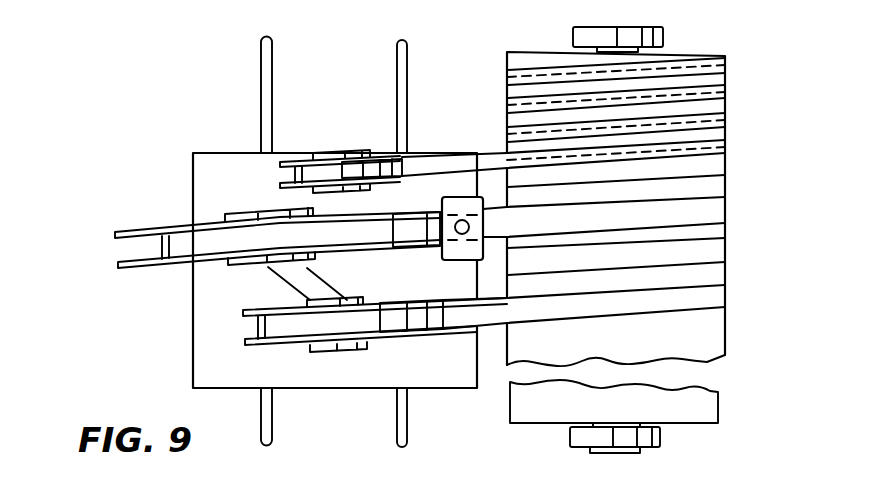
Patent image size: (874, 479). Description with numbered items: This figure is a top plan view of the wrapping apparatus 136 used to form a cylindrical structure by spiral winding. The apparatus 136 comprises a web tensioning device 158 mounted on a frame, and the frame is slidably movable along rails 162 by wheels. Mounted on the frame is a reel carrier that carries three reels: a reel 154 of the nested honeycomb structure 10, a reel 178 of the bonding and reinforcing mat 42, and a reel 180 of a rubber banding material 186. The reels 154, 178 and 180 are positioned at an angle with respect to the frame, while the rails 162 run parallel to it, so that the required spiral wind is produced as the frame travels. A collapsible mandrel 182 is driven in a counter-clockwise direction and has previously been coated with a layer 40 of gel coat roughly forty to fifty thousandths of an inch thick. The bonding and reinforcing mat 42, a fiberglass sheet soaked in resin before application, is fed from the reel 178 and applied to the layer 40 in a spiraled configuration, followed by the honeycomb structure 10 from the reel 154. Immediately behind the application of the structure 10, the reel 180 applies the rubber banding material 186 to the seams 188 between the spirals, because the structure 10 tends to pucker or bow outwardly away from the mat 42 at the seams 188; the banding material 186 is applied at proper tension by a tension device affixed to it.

The nested honeycomb structure 10 is at (722, 213).
The layer of gel coat 40 is at (712, 337).
The bonding and reinforcing mat 42 is at (722, 297).
The apparatus 136 is at (200, 136).
The reel of nested honeycomb structure 154 is at (262, 214).
The web tensioning device 158 is at (447, 196).
The rails 162 is at (392, 409).
The reel of bonding mat 178 is at (278, 348).
The reel of rubber banding material 180 is at (350, 150).
The collapsible mandrel 182 is at (680, 52).
The rubber banding material 186 is at (725, 123).
The seams 188 is at (713, 193).